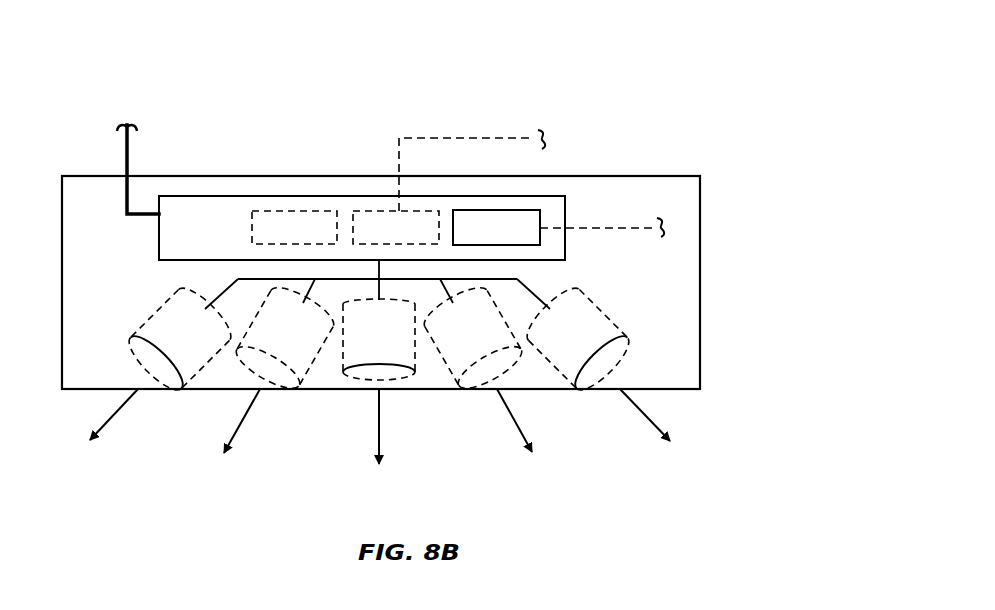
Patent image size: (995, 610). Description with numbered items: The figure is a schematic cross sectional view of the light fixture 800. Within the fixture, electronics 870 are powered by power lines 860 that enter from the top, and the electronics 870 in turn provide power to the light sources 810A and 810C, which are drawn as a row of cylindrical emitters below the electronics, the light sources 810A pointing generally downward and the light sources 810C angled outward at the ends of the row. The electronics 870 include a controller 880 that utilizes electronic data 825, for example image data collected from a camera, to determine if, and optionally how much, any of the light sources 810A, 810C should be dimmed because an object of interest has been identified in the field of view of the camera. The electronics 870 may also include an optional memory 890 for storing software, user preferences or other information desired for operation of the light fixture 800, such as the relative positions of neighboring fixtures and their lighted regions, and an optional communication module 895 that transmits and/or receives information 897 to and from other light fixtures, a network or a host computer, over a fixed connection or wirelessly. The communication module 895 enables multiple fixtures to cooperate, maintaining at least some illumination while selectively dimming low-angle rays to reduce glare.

The light fixture 800 is at (784, 137).
The power lines 860 is at (128, 148).
The electronics 870 is at (187, 239).
The memory 890 is at (279, 239).
The communication module 895 is at (380, 239).
The controller 880 is at (481, 239).
The information 897 is at (452, 136).
The electronic data 825 is at (600, 228).
The light source 810C is at (157, 346).
The light source 810A is at (267, 333).